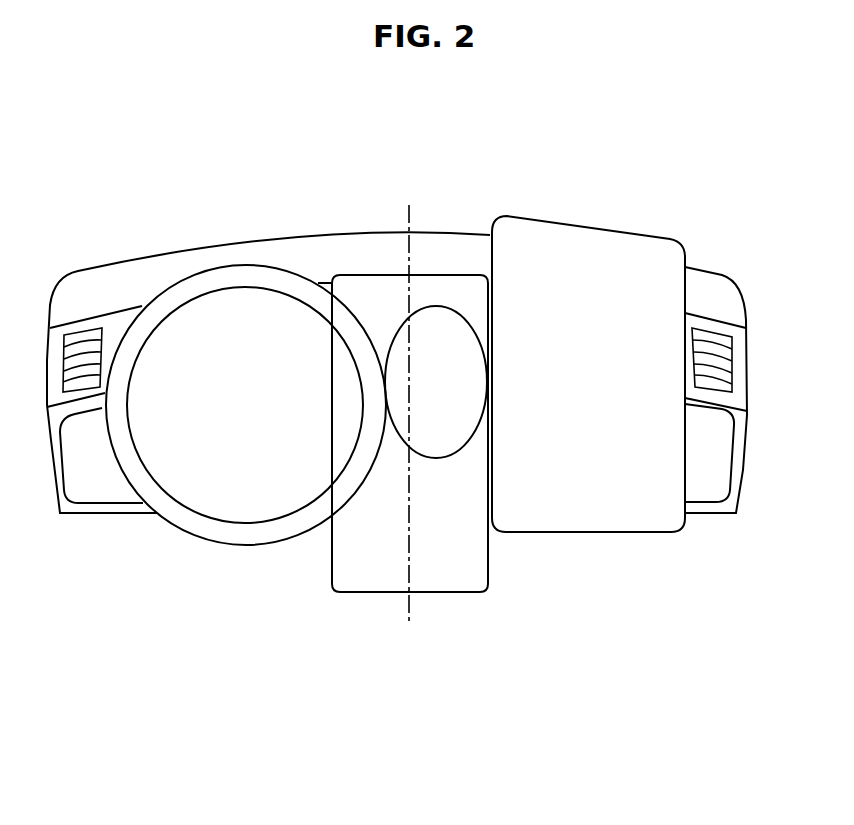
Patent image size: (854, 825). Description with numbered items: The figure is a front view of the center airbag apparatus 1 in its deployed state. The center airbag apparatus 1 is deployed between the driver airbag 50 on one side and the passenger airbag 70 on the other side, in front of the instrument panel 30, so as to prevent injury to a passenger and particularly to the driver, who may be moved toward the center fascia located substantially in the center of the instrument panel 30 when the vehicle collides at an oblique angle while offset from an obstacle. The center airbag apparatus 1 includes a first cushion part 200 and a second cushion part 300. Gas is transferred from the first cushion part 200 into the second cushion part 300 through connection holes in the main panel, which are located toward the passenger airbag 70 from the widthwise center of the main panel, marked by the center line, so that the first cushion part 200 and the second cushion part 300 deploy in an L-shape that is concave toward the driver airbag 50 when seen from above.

The center airbag apparatus 1 is at (460, 620).
The instrument panel 30 is at (320, 250).
The driver airbag 50 is at (240, 482).
The passenger airbag 70 is at (642, 265).
The first cushion part 200 is at (373, 570).
The second cushion part 300 is at (445, 343).